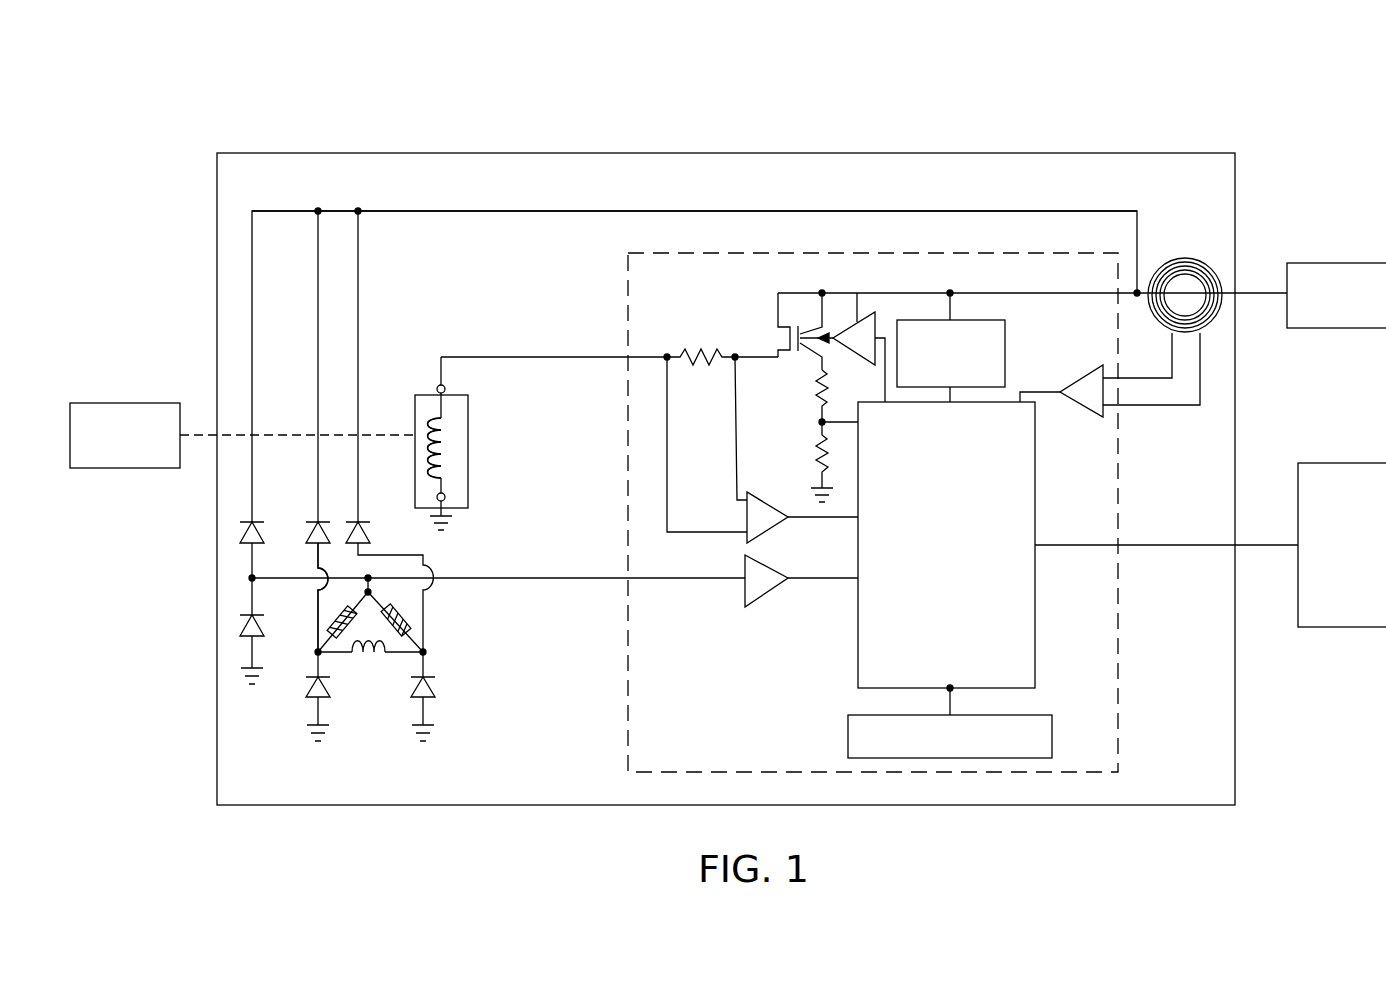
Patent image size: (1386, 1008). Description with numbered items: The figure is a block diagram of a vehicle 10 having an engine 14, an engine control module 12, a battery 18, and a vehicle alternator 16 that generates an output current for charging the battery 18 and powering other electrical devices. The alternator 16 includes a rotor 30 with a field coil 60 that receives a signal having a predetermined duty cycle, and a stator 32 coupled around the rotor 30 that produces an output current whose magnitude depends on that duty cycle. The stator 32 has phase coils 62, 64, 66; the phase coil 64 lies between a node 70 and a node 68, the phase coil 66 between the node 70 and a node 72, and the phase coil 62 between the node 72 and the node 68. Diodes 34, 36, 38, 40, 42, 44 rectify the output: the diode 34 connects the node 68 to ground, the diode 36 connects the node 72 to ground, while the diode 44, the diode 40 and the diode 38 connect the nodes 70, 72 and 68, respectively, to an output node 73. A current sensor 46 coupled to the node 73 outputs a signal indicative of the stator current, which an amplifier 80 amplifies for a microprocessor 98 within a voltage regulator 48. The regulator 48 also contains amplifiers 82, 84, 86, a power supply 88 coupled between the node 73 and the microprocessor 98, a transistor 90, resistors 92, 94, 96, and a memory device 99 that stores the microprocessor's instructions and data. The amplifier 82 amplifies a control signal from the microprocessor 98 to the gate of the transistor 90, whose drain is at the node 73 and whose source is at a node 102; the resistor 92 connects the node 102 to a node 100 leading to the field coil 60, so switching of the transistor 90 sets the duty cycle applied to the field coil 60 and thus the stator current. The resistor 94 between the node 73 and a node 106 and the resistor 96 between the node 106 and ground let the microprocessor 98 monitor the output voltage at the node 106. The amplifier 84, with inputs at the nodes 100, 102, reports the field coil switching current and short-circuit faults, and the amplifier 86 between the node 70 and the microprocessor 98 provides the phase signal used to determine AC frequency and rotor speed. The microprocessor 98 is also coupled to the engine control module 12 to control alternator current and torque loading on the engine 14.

The vehicle 10 is at (1288, 126).
The engine control module 12 is at (1340, 628).
The engine 14 is at (122, 403).
The vehicle alternator 16 is at (983, 152).
The battery 18 is at (1337, 263).
The rotor 30 is at (468, 420).
The stator 32 is at (434, 633).
The diode 34 is at (440, 692).
The diode 36 is at (330, 690).
The diode 38 is at (367, 532).
The diode 40 is at (321, 521).
The diode 42 is at (246, 618).
The diode 44 is at (255, 521).
The current sensor 46 is at (1183, 258).
The voltage regulator 48 is at (905, 254).
The field coil 60 is at (452, 466).
The phase coil 62 is at (366, 660).
The phase coil 64 is at (408, 613).
The phase coil 66 is at (317, 612).
The node 68 is at (426, 652).
The node 70 is at (368, 578).
The node 72 is at (315, 653).
The node 73 is at (358, 211).
The amplifier 80 is at (1082, 410).
The amplifier 82 is at (857, 322).
The amplifier 84 is at (747, 510).
The amplifier 86 is at (772, 592).
The power supply 88 is at (1010, 355).
The transistor 90 is at (810, 330).
The resistor 92 is at (704, 365).
The resistor 94 is at (816, 383).
The resistor 96 is at (812, 447).
The microprocessor 98 is at (1035, 598).
The memory device 99 is at (1052, 730).
The node 100 is at (667, 357).
The node 102 is at (735, 357).
The node 106 is at (822, 422).